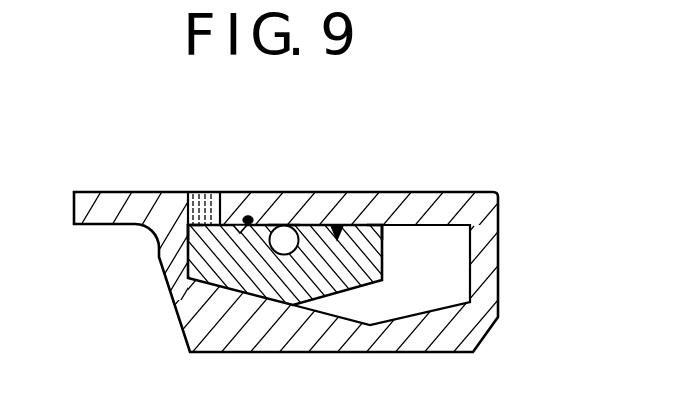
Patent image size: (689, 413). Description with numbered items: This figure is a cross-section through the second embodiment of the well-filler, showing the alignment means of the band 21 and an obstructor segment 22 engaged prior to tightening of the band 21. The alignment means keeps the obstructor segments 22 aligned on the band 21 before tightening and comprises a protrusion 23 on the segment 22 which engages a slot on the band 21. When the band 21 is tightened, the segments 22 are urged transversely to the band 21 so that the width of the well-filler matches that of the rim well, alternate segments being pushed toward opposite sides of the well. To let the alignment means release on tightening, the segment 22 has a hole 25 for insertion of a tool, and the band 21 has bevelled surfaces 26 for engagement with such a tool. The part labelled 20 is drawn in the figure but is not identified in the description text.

The ball projection 20 is at (288, 225).
The seal ring 21 is at (232, 226).
The housing 22 is at (488, 294).
The sealing lip 23 is at (248, 220).
The spacer strip 25 is at (207, 191).
The groove corners 26 is at (380, 225).